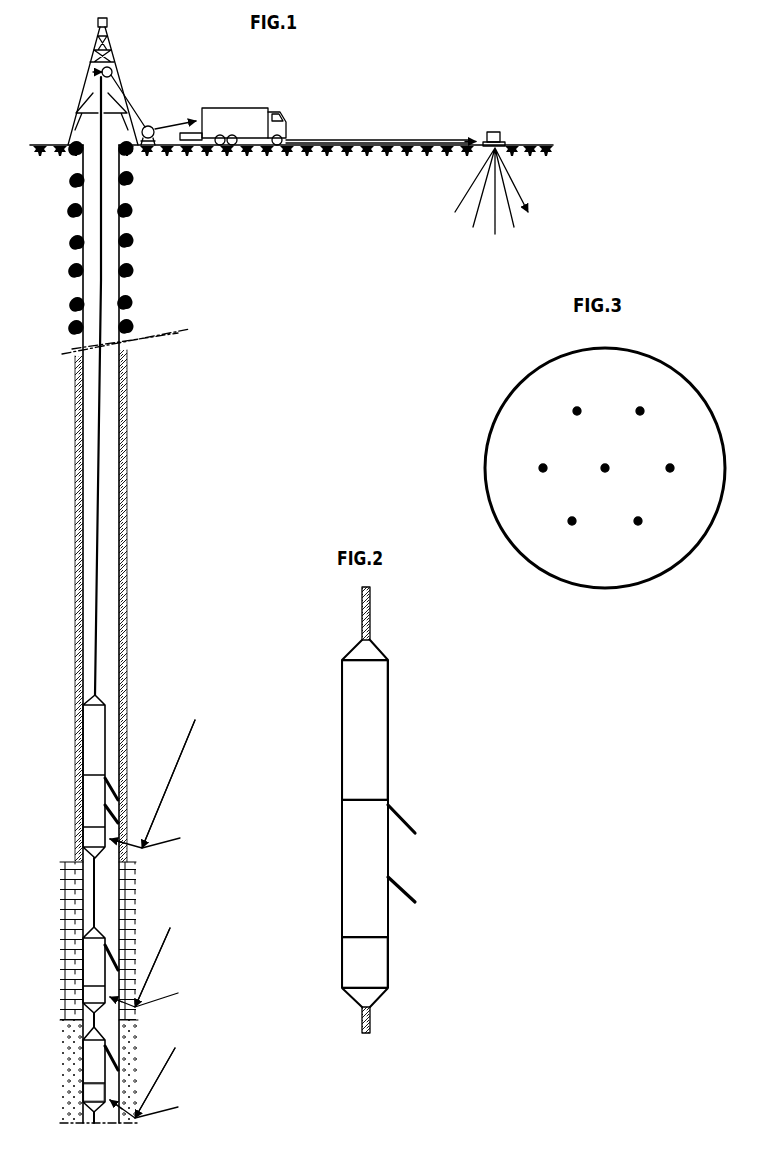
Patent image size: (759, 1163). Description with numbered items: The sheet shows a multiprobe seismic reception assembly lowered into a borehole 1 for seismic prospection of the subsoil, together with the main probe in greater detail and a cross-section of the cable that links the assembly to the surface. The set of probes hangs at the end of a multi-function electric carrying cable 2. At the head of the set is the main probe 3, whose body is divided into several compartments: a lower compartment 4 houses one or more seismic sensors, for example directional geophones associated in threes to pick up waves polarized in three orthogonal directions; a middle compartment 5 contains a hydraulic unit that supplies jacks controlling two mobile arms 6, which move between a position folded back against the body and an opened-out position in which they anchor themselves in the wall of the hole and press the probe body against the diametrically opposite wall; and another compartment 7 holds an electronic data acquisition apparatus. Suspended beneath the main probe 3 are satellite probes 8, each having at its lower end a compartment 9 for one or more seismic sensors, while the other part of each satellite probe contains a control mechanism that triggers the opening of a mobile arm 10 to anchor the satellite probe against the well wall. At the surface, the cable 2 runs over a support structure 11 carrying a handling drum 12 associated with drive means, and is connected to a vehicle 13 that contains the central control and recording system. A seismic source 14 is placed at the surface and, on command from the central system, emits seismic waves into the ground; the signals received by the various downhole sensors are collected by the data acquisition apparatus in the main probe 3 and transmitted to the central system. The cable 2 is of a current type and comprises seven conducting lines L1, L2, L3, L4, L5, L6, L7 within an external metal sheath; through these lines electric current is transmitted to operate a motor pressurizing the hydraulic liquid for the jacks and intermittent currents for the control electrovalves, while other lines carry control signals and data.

In FIG. 1, the borehole 1 is at (112, 475).
In FIG. 1, the multi-function electric carrying cable 2 is at (102, 282).
In FIG. 1, the main probe 3 is at (110, 675).
In FIG. 2, the main probe 3 is at (440, 706).
In FIG. 2, the lower compartment 4 is at (342, 937).
In FIG. 2, the middle compartment 5 is at (342, 845).
In FIG. 2, the mobile arms 6 is at (415, 893).
In FIG. 2, the compartment 7 is at (342, 733).
In FIG. 1, the satellite probes 8 is at (61, 970).
In FIG. 1, the compartment 9 is at (90, 1098).
In FIG. 1, the mobile arm 10 is at (119, 946).
In FIG. 1, the support structure 11 is at (75, 118).
In FIG. 1, the handling drum 12 is at (149, 126).
In FIG. 1, the vehicle 13 is at (225, 108).
In FIG. 1, the seismic source 14 is at (486, 131).
In FIG. 3, the conducting line L1 is at (564, 401).
In FIG. 3, the conducting line L2 is at (654, 401).
In FIG. 3, the conducting line L3 is at (692, 479).
In FIG. 3, the conducting line L4 is at (652, 534).
In FIG. 3, the conducting line L5 is at (562, 534).
In FIG. 3, the conducting line L6 is at (528, 479).
In FIG. 3, the conducting line L7 is at (617, 479).